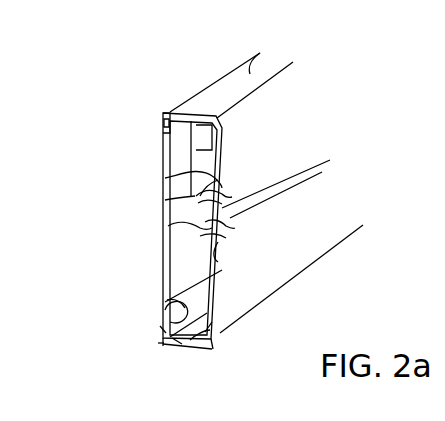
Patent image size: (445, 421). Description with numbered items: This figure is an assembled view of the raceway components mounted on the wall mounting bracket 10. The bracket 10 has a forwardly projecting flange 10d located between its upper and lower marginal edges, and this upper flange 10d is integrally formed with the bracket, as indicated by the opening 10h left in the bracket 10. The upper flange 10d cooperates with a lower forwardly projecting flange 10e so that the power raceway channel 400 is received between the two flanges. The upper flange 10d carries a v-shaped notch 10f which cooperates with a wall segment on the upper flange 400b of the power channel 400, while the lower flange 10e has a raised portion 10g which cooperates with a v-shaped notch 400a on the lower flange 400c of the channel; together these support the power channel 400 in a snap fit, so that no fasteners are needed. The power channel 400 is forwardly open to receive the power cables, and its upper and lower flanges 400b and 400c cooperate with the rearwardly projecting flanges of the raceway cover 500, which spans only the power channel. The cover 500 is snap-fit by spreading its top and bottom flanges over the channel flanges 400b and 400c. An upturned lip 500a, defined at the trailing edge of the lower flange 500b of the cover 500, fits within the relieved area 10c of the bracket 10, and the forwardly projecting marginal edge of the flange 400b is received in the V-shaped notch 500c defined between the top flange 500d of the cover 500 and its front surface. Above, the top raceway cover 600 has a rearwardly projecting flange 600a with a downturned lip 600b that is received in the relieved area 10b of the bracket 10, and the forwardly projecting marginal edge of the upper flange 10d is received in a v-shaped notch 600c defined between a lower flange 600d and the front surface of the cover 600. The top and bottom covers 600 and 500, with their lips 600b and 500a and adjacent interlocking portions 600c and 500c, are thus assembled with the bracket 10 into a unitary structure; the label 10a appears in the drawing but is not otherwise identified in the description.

The wall mounting bracket 10 is at (126, 153).
The housing opening 10a is at (165, 178).
The relieved area 10b is at (165, 123).
The relieved area 10c is at (160, 327).
The forwardly projecting flange 10d is at (216, 186).
The forwardly projecting flange 10e is at (175, 336).
The v-shaped notch 10f is at (165, 200).
The raised portion 10g is at (158, 343).
The opening 10h is at (205, 150).
The power raceway channel 400 is at (182, 290).
The v-shaped notch 400a is at (167, 300).
The upper flange 400b is at (168, 226).
The lower flange 400c is at (205, 332).
The raceway cover 500 is at (216, 309).
The upturned lip 500a is at (160, 325).
The lower flange 500b is at (207, 348).
The V-shaped notch 500c is at (218, 262).
The top flange 500d is at (226, 228).
The top raceway cover 600 is at (284, 133).
The rearwardly projecting flange 600a is at (293, 62).
The downturned lip 600b is at (163, 122).
The v-shaped notch 600c is at (246, 206).
The lower flange 600d is at (222, 192).